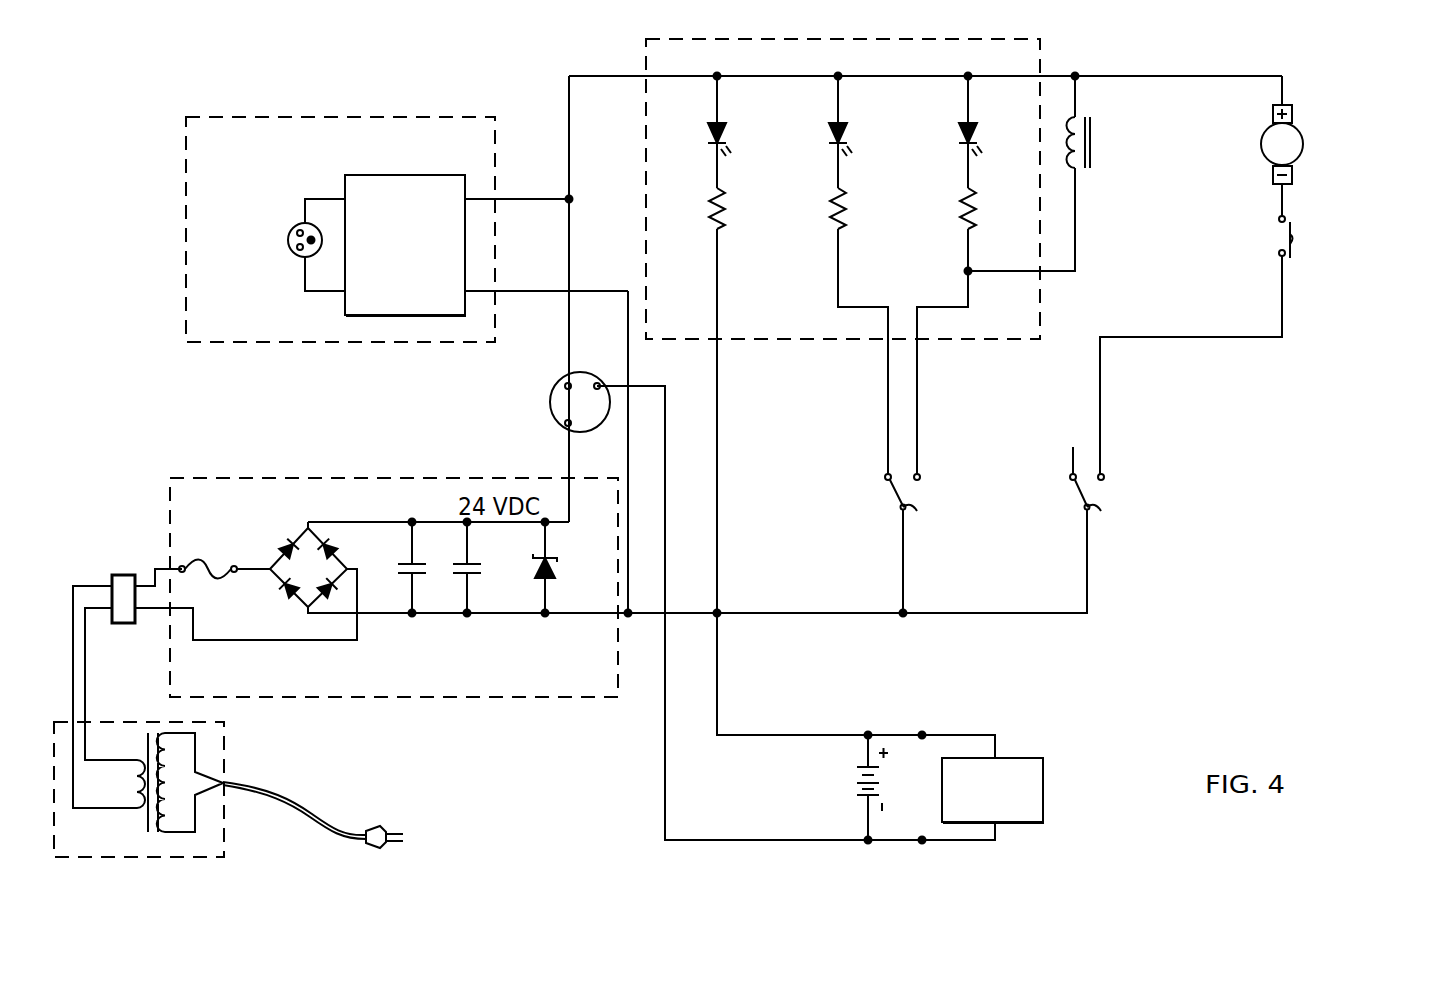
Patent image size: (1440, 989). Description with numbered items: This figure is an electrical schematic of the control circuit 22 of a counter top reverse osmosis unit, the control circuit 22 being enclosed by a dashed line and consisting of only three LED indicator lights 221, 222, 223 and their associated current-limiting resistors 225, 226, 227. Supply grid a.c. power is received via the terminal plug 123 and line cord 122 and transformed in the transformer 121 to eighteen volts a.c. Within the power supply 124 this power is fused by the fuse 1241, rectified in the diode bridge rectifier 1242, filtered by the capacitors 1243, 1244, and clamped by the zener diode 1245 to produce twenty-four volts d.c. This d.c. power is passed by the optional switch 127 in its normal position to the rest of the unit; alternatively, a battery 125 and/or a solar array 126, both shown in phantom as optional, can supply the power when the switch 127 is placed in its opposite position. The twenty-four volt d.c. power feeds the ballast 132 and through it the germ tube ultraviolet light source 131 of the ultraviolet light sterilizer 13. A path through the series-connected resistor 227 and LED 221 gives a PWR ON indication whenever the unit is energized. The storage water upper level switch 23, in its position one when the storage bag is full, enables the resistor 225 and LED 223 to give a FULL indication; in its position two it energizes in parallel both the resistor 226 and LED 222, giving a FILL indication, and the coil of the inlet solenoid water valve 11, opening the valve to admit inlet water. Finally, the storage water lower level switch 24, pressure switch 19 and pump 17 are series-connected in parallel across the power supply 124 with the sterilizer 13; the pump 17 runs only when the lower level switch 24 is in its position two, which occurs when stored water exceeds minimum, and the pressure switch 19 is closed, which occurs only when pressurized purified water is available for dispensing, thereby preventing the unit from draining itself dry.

The inlet solenoid water valve 11 is at (1092, 124).
The ultraviolet light sterilizer 13 is at (350, 116).
The ultraviolet light source 131 is at (298, 228).
The ballast 132 is at (393, 188).
The pump 17 is at (1293, 113).
The pressure switch 19 is at (1292, 222).
The control circuit 22 is at (892, 40).
The light-emitting diode 221 is at (733, 112).
The light-emitting diode 222 is at (973, 124).
The light-emitting diode 223 is at (842, 122).
The resistor 225 is at (846, 218).
The resistor 226 is at (976, 219).
The resistor 227 is at (726, 213).
The storage water upper level switch 23 is at (948, 503).
The storage water lower level switch 24 is at (1133, 503).
The transformer 121 is at (163, 857).
The line cord 122 is at (285, 798).
The terminal plug 123 is at (377, 848).
The power supply 124 is at (442, 697).
The fuse 1241 is at (214, 550).
The diode bridge rectifier 1242 is at (273, 592).
The capacitor 1243 is at (404, 562).
The capacitor 1244 is at (502, 556).
The zener diode 1245 is at (556, 566).
The battery 125 is at (857, 765).
The solar array 126 is at (1028, 758).
The switch 127 is at (590, 418).